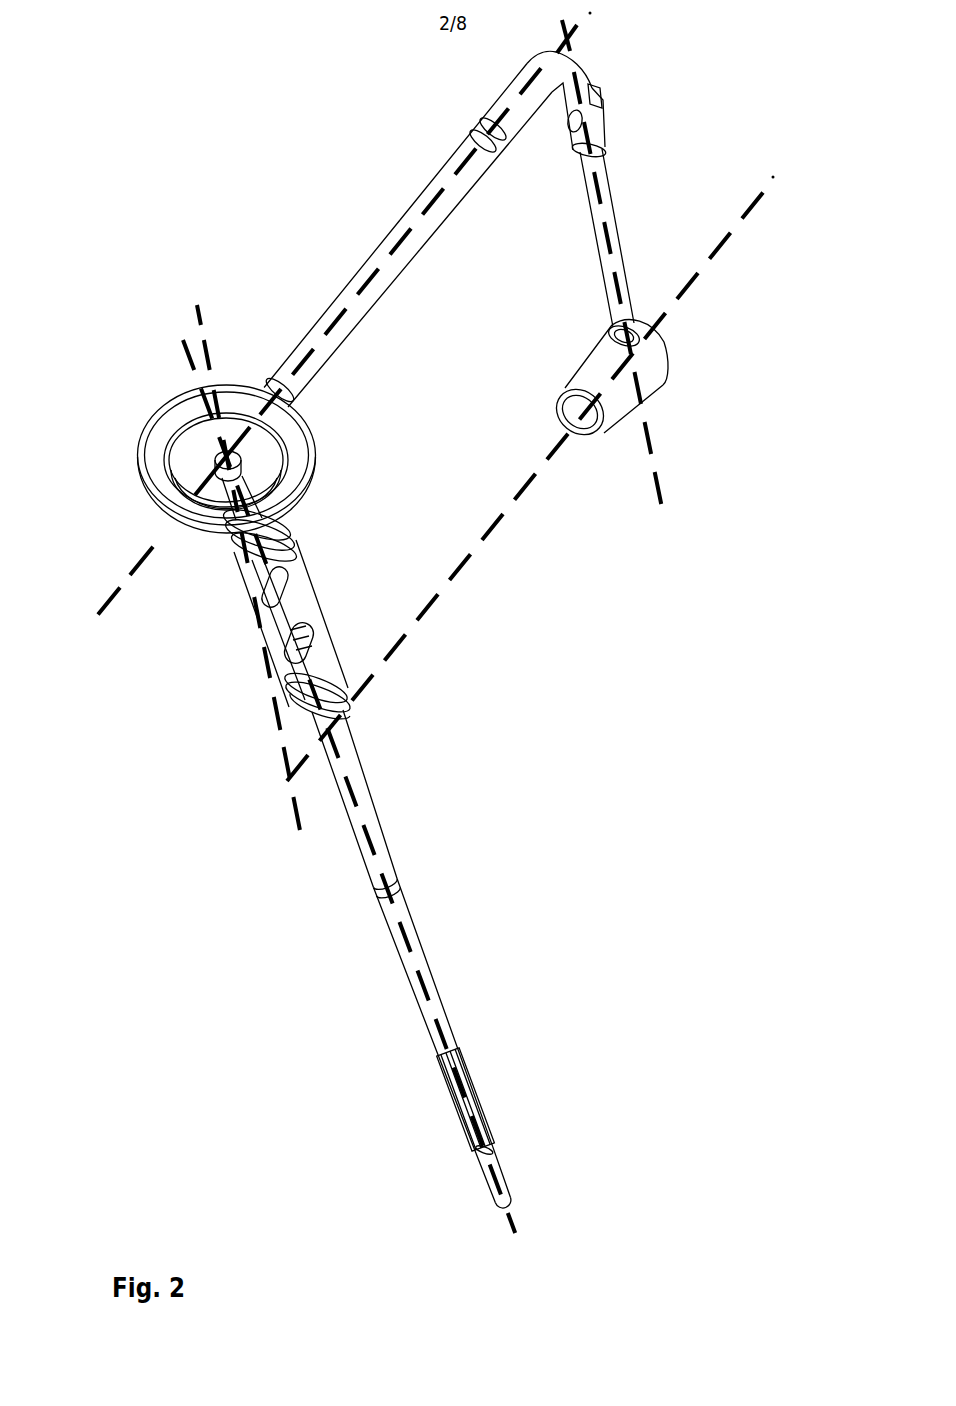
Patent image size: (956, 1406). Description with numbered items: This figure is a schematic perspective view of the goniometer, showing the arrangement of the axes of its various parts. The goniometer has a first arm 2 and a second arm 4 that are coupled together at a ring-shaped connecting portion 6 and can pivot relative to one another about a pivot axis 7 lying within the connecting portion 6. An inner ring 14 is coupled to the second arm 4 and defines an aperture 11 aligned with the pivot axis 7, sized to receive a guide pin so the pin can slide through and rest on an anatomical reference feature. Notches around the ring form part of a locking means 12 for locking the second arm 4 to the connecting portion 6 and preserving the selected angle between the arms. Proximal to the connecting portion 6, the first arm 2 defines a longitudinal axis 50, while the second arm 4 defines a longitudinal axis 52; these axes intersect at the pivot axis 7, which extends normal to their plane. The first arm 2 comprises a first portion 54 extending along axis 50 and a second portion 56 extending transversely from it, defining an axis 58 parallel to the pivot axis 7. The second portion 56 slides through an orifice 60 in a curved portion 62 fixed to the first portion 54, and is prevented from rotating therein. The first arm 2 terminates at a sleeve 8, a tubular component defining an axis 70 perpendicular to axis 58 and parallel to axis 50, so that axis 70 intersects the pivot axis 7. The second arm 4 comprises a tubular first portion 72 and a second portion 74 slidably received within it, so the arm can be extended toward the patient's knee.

The first arm 2 is at (413, 217).
The second arm 4 is at (440, 993).
The connecting portion 6 is at (305, 452).
The pivot axis 7 is at (293, 813).
The sleeve 8 is at (648, 362).
The aperture 11 is at (230, 453).
The locking means 12 is at (338, 578).
The inner ring 14 is at (213, 460).
The longitudinal axis 50 is at (578, 27).
The longitudinal axis 52 is at (357, 797).
The first portion 54 is at (357, 302).
The second portion 56 is at (608, 203).
The axis 58 is at (560, 23).
The orifice 60 is at (576, 58).
The curved portion 62 is at (561, 85).
The axis 70 is at (726, 240).
The tubular first portion 72 is at (472, 1083).
The second portion 74 is at (500, 1173).